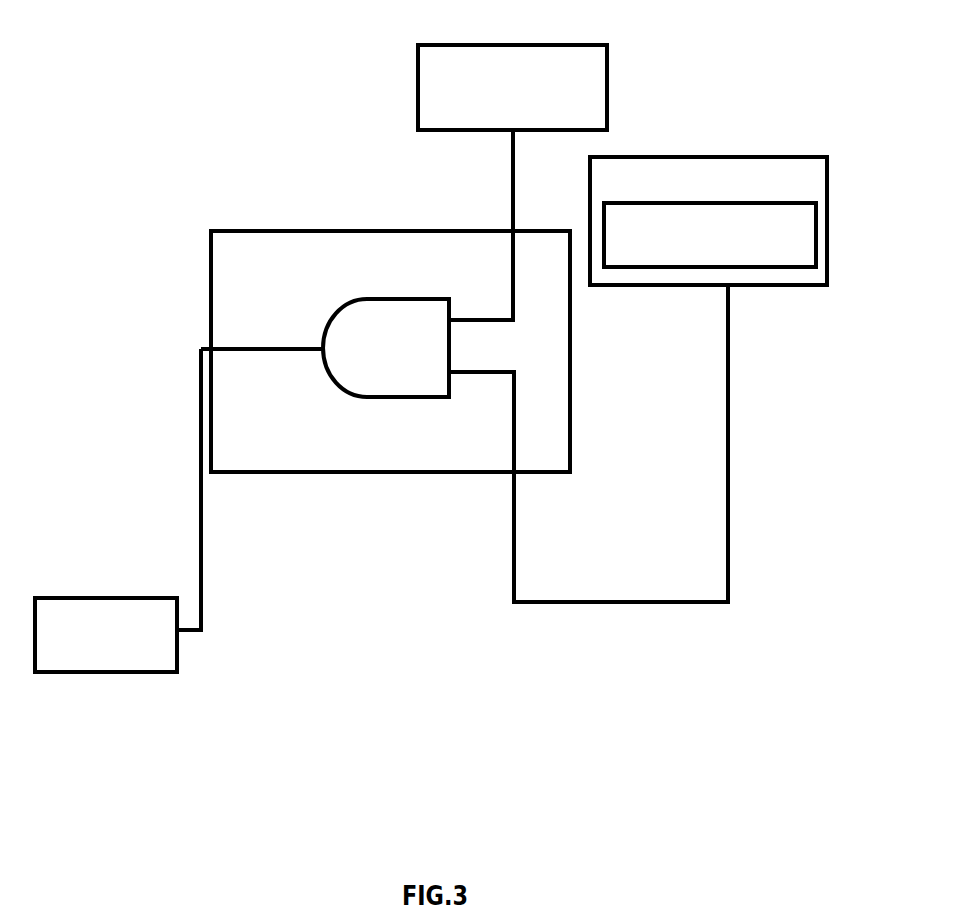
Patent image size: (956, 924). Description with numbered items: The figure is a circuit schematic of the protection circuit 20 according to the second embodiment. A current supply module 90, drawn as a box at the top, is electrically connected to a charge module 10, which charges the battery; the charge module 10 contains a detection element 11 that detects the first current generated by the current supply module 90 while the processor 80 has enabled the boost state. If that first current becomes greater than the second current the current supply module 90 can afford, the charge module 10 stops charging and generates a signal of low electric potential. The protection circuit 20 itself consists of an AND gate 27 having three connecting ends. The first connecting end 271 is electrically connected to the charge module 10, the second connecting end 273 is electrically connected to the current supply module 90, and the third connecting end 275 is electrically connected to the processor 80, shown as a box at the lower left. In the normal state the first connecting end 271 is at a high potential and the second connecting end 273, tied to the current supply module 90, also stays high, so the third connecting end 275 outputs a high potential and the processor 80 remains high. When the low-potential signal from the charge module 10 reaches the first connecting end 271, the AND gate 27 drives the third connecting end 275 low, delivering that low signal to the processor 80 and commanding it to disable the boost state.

The current supply module 90 is at (512, 182).
The charge module 10 is at (670, 379).
The detection element 11 is at (710, 235).
The protection circuit 20 is at (209, 261).
The AND gate 27 is at (386, 348).
The second connecting end 273 is at (452, 319).
The first connecting end 271 is at (450, 373).
The third connecting end 275 is at (321, 350).
The processor 80 is at (118, 510).